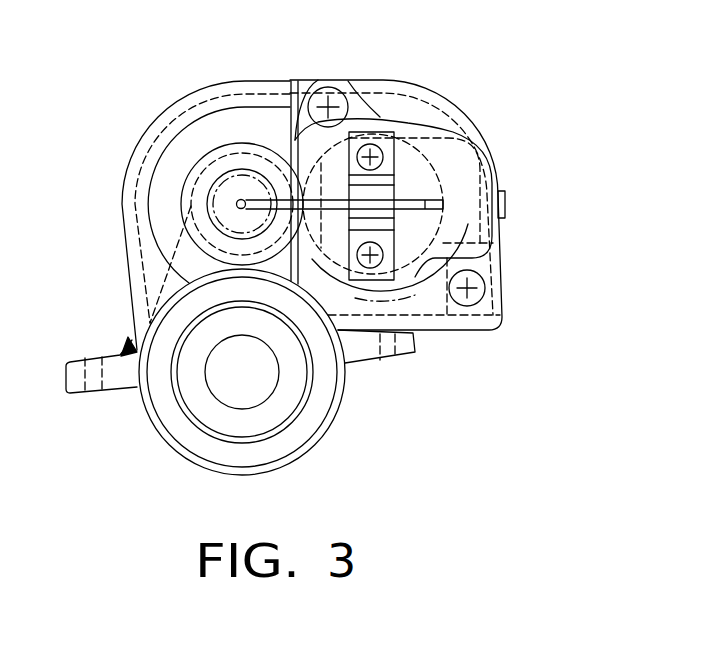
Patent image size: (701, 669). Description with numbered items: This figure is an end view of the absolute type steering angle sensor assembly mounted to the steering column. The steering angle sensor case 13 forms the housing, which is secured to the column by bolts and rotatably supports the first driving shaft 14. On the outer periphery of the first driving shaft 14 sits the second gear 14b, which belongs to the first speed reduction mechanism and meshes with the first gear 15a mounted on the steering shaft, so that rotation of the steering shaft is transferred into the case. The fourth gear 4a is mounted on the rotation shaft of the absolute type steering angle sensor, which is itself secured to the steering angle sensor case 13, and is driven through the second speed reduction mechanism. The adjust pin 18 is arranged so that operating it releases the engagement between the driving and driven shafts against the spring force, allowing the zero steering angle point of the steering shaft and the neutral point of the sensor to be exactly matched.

The steering angle sensor case 13 is at (164, 97).
The second gear 14b is at (219, 99).
The fourth gear 4a is at (380, 110).
The first driving shaft 14 is at (399, 156).
The adjust pin 18 is at (435, 191).
The first gear 15a is at (294, 407).